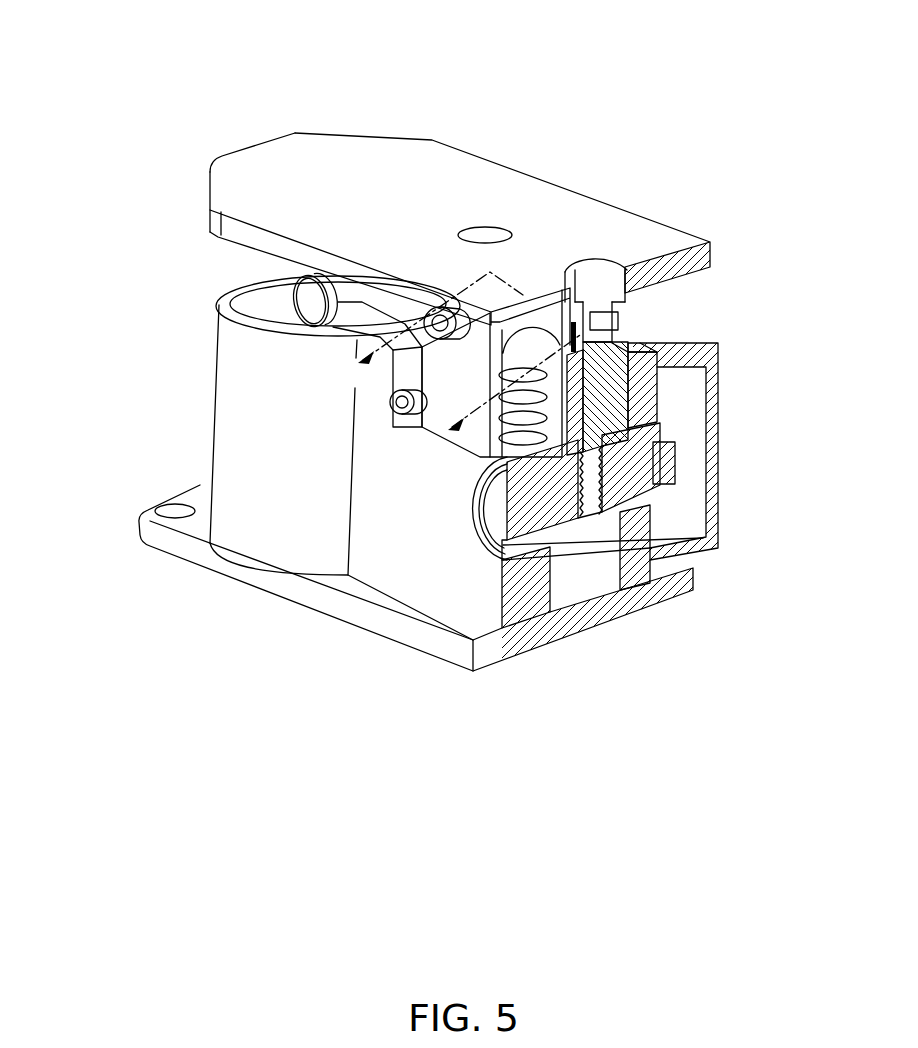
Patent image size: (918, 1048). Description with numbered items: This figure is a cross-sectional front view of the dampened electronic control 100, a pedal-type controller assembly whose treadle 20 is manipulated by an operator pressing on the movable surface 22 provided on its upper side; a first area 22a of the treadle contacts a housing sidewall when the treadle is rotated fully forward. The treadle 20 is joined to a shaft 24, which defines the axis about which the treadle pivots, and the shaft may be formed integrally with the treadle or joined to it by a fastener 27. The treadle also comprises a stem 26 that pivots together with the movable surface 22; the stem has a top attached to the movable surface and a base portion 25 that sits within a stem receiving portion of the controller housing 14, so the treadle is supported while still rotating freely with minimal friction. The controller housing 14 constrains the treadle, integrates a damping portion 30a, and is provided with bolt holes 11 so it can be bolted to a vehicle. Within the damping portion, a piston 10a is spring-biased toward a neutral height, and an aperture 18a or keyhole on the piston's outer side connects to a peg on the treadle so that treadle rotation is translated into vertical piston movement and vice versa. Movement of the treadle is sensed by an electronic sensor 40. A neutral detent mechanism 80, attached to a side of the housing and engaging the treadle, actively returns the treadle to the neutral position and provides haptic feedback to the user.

The dampened electronic control 100 is at (732, 60).
The movable surface 22 is at (471, 178).
The first area 22a is at (241, 127).
The treadle 20 is at (232, 224).
The fastener 27 is at (612, 326).
The stem 26 is at (627, 350).
The piston 10a is at (291, 289).
The aperture 18a is at (305, 300).
The damping portion 30a is at (182, 401).
The bolt hole 11 is at (176, 498).
The controller housing 14 is at (150, 539).
The neutral detent mechanism 80 is at (447, 402).
The shaft 24 is at (490, 503).
The base portion 25 is at (600, 530).
The electronic sensor 40 is at (718, 503).